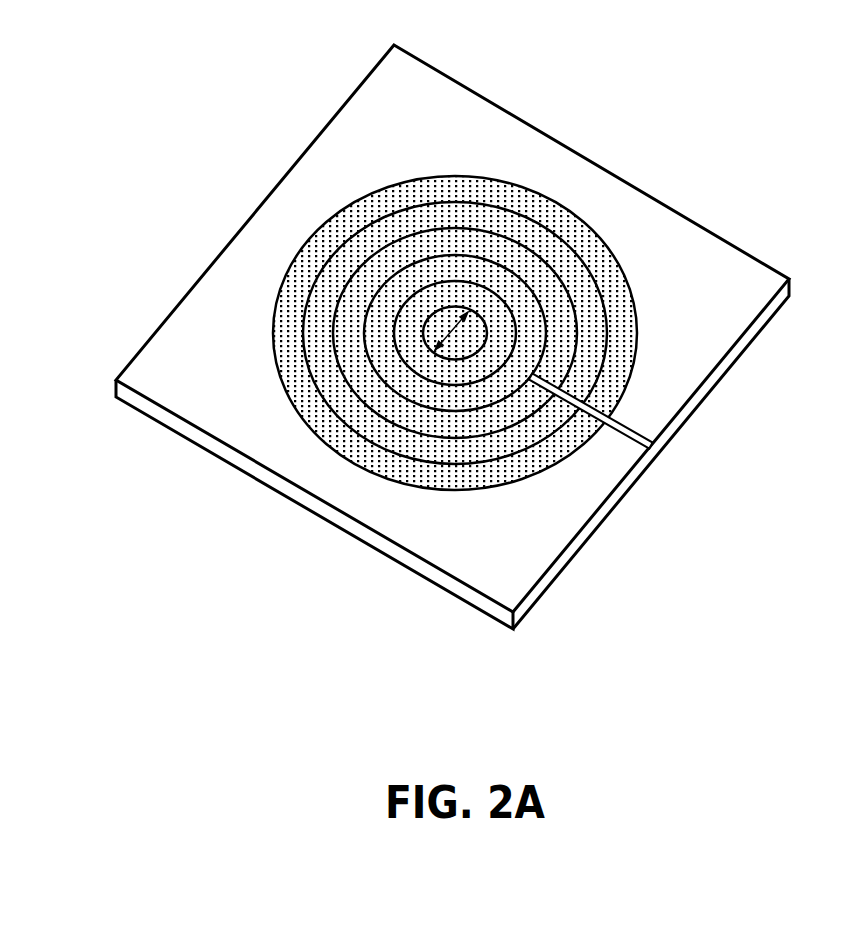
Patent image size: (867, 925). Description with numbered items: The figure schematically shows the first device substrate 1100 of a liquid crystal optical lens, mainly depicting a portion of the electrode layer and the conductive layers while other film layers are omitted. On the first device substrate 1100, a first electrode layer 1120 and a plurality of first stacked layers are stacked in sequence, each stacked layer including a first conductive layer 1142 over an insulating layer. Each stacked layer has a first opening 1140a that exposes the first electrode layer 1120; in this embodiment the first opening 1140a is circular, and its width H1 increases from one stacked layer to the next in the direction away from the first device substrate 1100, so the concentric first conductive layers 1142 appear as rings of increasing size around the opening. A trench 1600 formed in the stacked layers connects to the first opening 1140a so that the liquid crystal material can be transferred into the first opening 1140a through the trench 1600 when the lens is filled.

The first device substrate 1100 is at (687, 603).
The first electrode layer 1120 is at (455, 340).
The first conductive layer 1142 is at (455, 321).
The first opening 1140a is at (635, 269).
The width of the first opening H1 is at (621, 263).
The trench 1600 is at (678, 410).